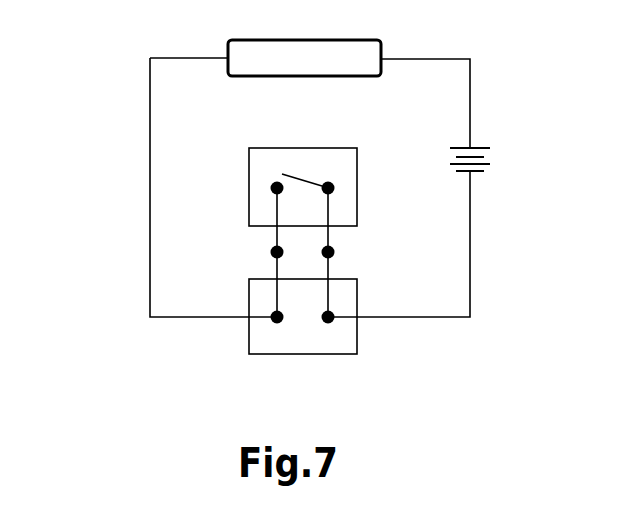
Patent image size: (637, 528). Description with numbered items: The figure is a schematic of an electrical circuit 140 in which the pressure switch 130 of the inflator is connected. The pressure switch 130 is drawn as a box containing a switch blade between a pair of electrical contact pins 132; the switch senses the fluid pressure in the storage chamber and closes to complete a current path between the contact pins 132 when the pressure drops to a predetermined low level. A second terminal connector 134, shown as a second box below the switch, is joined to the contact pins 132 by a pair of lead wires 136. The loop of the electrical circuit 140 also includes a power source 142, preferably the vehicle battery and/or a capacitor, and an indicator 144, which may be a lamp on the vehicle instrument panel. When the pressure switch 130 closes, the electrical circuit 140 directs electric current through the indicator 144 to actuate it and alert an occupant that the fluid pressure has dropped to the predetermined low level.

The electrical circuit 140 is at (160, 36).
The indicator 144 is at (364, 40).
The power source 142 is at (478, 172).
The pressure switch 130 is at (290, 148).
The electrical contact pins 132 is at (274, 240).
The lead wires 136 is at (276, 268).
The second terminal connector 134 is at (320, 356).